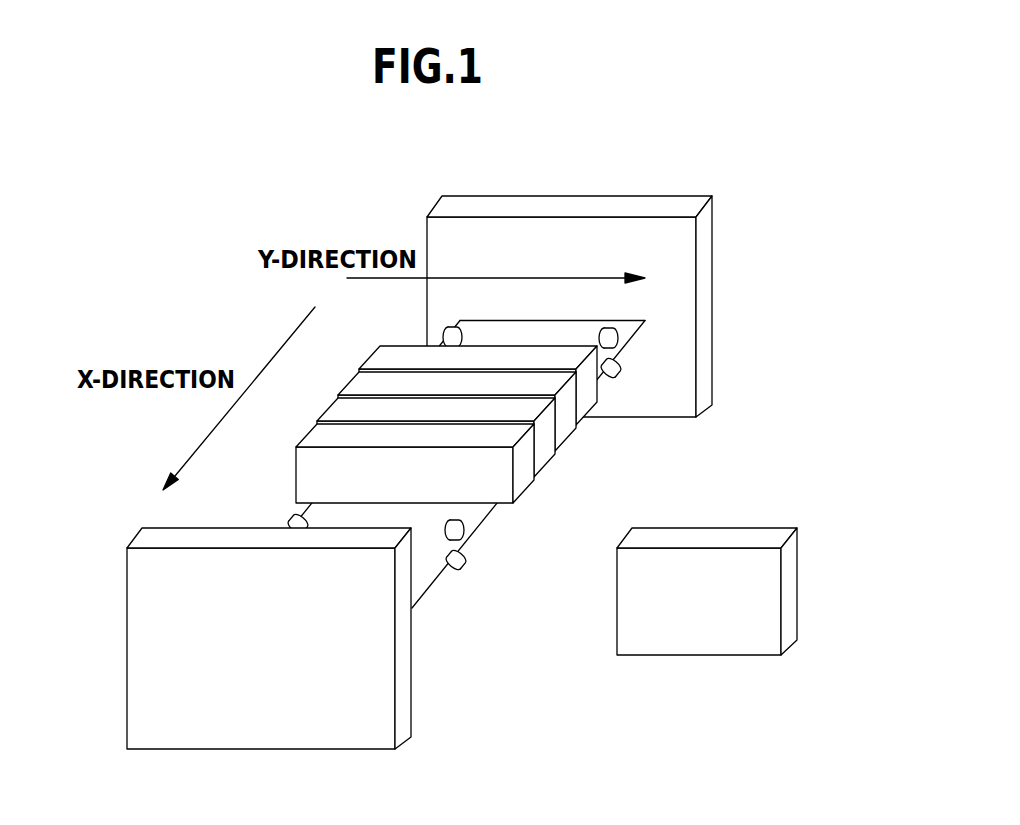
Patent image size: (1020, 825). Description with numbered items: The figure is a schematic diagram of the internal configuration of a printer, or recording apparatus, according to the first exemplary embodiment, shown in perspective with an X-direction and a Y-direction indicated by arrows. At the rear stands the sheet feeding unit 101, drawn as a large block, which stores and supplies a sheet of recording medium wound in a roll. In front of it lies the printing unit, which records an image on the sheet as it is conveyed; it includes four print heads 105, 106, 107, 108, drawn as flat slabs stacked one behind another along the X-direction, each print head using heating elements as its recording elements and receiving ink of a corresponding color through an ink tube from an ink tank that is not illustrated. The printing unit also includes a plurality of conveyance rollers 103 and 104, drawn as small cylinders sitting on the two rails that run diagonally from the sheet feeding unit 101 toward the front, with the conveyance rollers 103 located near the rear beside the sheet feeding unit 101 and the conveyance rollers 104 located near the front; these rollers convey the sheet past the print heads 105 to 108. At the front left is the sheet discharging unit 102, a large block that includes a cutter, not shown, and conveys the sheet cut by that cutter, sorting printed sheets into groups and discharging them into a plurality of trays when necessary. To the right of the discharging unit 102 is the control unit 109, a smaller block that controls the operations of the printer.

The sheet feeding unit 101 is at (460, 197).
The discharging unit 102 is at (153, 530).
The conveyance rollers 103 is at (446, 328).
The conveyance rollers 104 is at (292, 523).
The print head 105 is at (387, 348).
The print head 106 is at (360, 373).
The print head 107 is at (338, 397).
The print head 108 is at (315, 427).
The control unit 109 is at (655, 528).